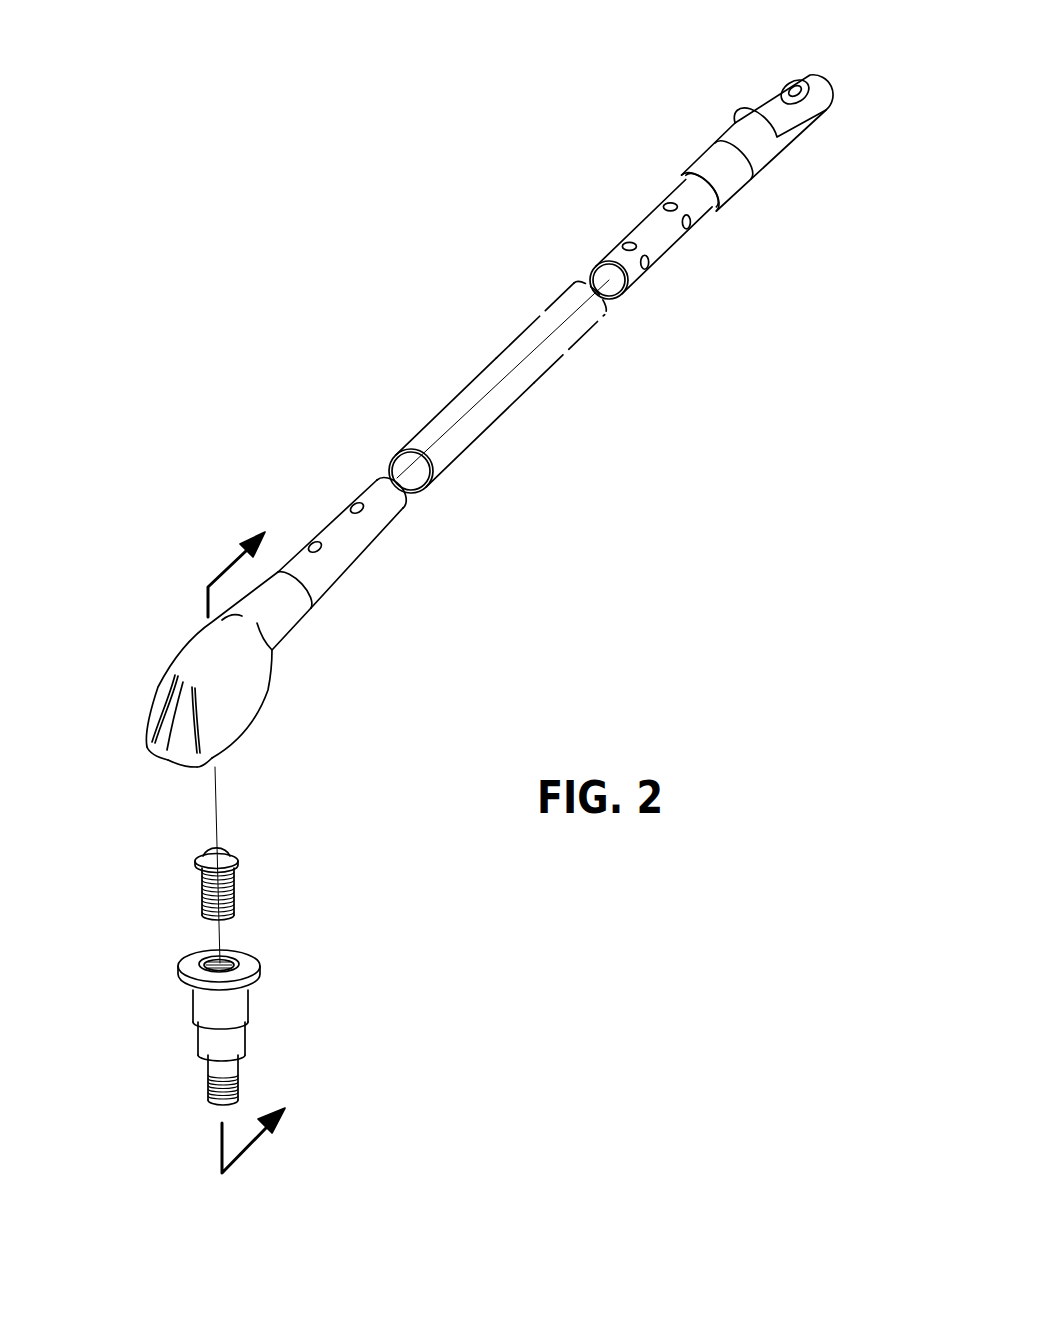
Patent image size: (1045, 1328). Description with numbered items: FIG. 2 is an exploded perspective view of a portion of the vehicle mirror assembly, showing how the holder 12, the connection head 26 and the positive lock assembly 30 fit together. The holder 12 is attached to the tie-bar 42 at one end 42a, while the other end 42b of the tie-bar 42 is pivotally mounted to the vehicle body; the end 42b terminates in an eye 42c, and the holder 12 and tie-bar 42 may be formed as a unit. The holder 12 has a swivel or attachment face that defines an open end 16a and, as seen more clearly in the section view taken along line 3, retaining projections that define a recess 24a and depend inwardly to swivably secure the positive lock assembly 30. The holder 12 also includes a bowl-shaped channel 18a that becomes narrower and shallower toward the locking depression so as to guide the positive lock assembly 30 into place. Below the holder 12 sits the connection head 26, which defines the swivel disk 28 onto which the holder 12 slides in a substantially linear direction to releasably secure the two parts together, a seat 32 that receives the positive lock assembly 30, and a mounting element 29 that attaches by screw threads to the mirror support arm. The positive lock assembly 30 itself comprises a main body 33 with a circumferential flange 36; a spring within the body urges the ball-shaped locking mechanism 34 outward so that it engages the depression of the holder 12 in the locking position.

The holder 12 is at (225, 725).
The open end 16a is at (173, 768).
The channel 18a is at (158, 753).
The recess 24a is at (197, 768).
The connection head 26 is at (270, 1023).
The swivel disk 28 is at (237, 980).
The mounting element 29 is at (254, 1039).
The positive lock assembly 30 is at (230, 858).
The seat 32 is at (240, 963).
The main body 33 is at (200, 878).
The ball-shaped locking mechanism 34 is at (236, 853).
The circumferential flange 36 is at (234, 872).
The tie-bar 42 is at (524, 429).
The tie-bar end 42a is at (342, 553).
The tie-bar end 42b is at (750, 112).
The eye of rod end 42c is at (792, 85).
The section line for FIG. 3 is at (246, 840).